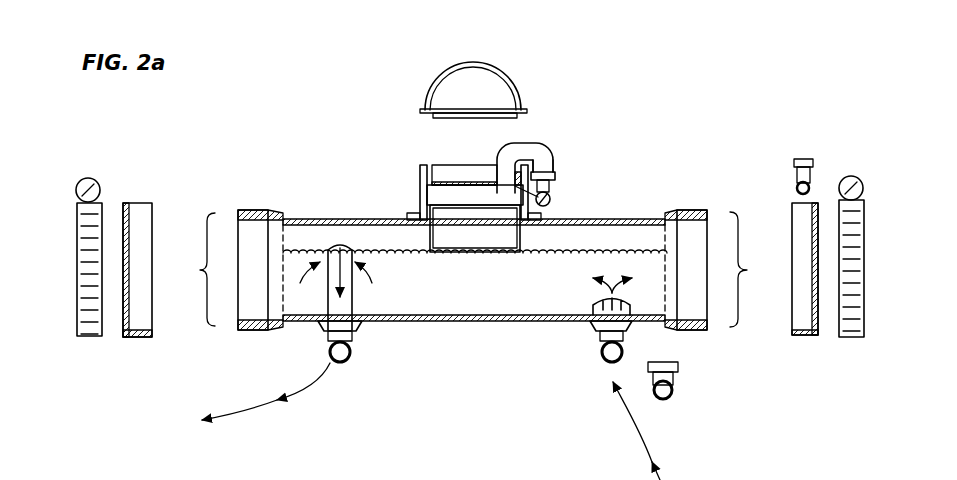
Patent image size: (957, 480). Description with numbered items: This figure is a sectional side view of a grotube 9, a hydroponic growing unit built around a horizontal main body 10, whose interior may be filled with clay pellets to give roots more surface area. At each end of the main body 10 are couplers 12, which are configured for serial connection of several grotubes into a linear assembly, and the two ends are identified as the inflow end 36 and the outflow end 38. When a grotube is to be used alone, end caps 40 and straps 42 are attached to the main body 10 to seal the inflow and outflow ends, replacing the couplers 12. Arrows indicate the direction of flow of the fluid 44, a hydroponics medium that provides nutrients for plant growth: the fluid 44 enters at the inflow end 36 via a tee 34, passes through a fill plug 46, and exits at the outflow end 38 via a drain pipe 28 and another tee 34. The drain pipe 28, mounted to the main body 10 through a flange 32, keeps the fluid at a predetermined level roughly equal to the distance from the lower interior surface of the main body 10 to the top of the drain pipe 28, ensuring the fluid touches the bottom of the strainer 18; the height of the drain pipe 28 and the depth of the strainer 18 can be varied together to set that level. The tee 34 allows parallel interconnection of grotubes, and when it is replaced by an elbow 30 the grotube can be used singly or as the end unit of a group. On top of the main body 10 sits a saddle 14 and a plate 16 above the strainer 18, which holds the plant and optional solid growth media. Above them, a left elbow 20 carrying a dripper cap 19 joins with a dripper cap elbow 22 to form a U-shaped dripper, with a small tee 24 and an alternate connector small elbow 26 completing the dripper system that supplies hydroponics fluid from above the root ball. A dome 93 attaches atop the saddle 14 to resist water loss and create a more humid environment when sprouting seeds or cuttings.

The grotube 9 is at (358, 108).
The main body 10 is at (317, 218).
The coupler 12 is at (258, 210).
The saddle 14 is at (420, 188).
The plate 16 is at (443, 163).
The strainer 18 is at (427, 237).
The dripper cap 19 is at (548, 203).
The left elbow 20 is at (527, 140).
The dripper cap elbow 22 is at (553, 160).
The small tee 24 is at (550, 183).
The alternate connector small elbow 26 is at (817, 178).
The drain pipe 28 is at (325, 298).
The elbow 30 is at (348, 362).
The flange 32 is at (365, 325).
The tee 34 is at (600, 345).
The inflow end 36 is at (754, 269).
The outflow end 38 is at (189, 269).
The end cap 40 is at (152, 215).
The strap 42 is at (77, 304).
The fluid 44 is at (440, 285).
The fill plug 46 is at (598, 305).
The dome 93 is at (527, 80).